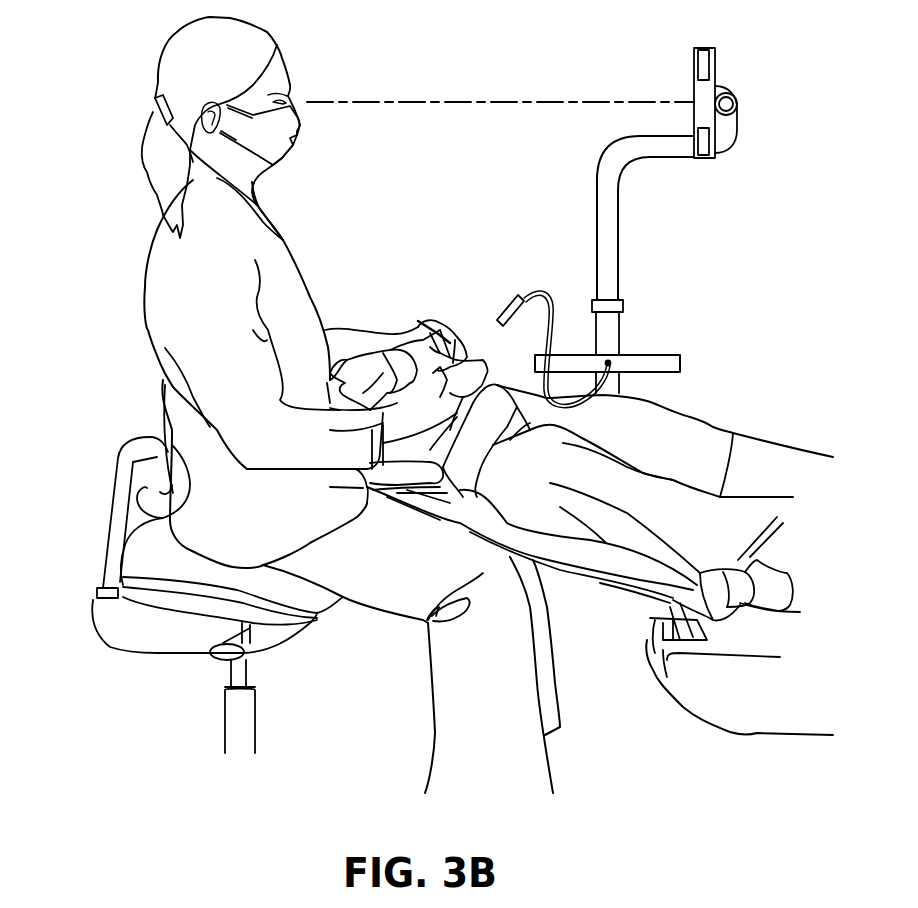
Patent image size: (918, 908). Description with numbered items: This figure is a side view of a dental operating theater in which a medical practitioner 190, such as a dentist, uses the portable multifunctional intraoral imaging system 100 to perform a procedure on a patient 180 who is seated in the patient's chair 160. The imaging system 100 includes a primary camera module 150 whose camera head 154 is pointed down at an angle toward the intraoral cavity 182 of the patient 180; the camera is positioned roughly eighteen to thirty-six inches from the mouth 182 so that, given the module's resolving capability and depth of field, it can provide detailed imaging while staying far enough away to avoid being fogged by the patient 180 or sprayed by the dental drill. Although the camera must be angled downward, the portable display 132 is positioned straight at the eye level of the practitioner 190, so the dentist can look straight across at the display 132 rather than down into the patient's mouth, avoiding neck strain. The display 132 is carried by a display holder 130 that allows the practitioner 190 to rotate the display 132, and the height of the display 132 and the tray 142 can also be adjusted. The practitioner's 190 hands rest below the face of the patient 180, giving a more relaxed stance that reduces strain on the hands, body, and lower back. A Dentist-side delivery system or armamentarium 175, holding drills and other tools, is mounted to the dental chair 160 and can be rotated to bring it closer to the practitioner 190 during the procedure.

The portable multifunctional intraoral imaging system 100 is at (604, 162).
The display holder 130 is at (710, 93).
The portable display 132 is at (700, 62).
The tray 142 is at (660, 355).
The primary camera module 150 is at (541, 290).
The camera head 154 is at (500, 302).
The patient's chair 160 is at (600, 583).
The Dentist-side delivery system or armamentarium 175 is at (377, 411).
The patient 180 is at (682, 437).
The intraoral cavity 182 is at (420, 340).
The medical practitioner 190 is at (170, 273).